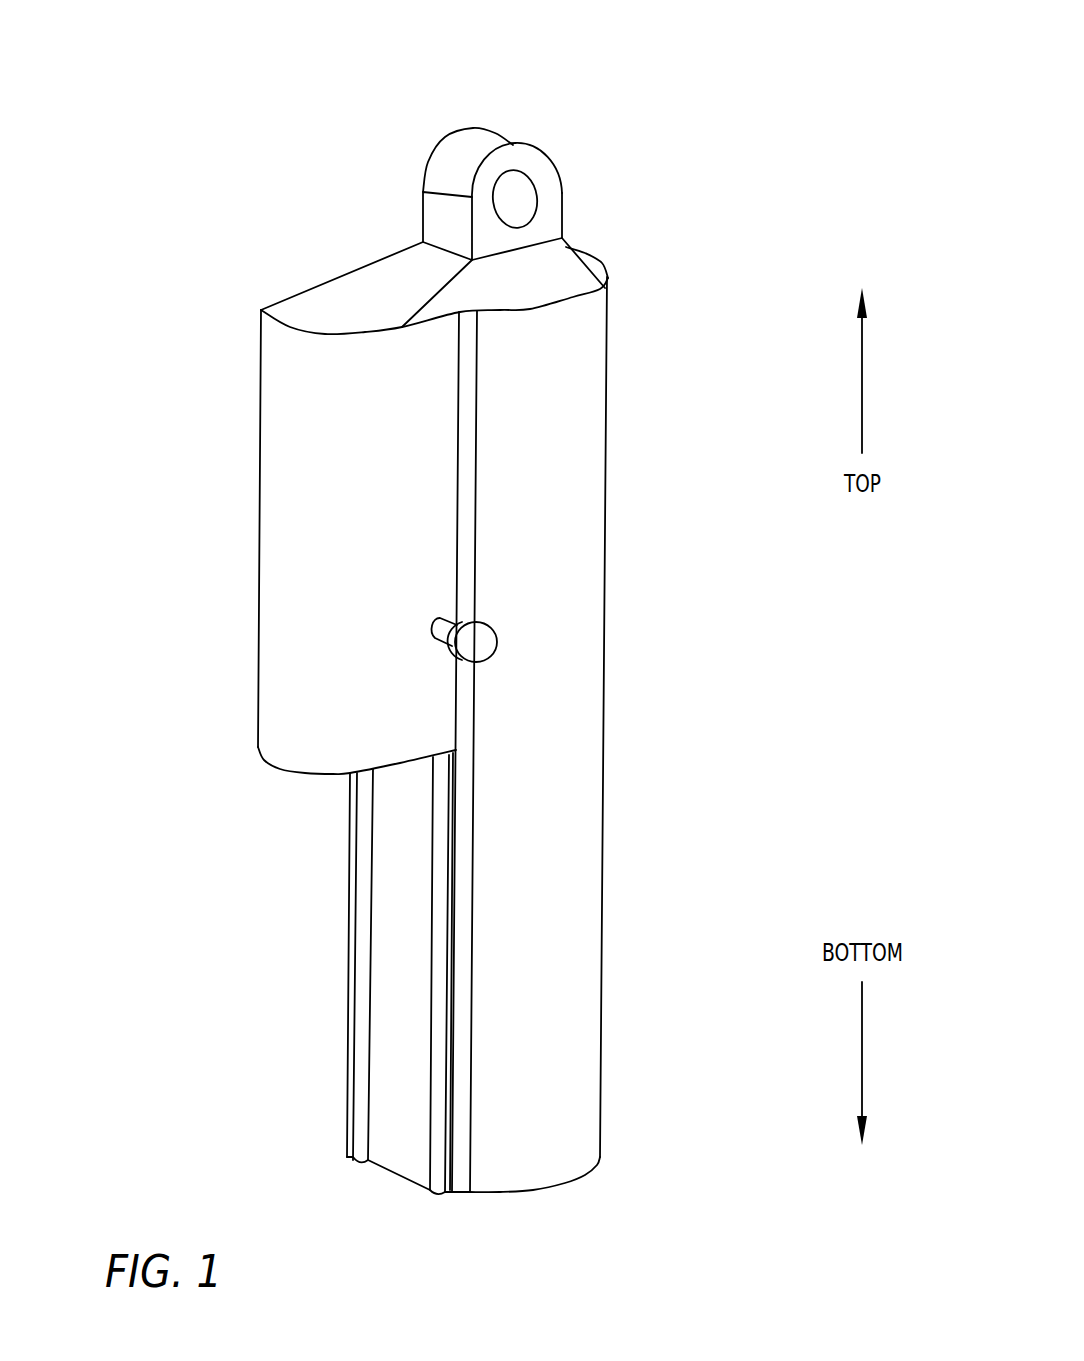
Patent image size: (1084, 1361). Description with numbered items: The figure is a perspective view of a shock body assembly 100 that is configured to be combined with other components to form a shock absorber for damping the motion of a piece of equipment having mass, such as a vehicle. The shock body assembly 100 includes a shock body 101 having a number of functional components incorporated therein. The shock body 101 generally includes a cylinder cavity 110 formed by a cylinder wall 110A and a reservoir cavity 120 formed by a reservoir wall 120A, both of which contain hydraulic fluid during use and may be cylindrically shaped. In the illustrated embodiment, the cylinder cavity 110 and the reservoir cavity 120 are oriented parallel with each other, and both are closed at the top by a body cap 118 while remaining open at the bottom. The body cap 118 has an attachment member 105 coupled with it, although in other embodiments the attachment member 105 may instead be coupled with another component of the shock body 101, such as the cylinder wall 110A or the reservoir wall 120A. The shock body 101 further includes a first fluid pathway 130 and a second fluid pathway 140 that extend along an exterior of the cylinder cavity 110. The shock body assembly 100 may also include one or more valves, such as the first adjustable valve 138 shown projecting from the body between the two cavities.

The shock body assembly 100 is at (690, 154).
The shock body 101 is at (635, 340).
The attachment member 105 is at (507, 138).
The cylinder cavity 110 is at (552, 945).
The cylinder wall 110A is at (600, 817).
The body cap 118 is at (378, 287).
The reservoir cavity 120 is at (307, 505).
The reservoir wall 120A is at (258, 623).
The first fluid pathway 130 is at (438, 1090).
The first adjustable valve 138 is at (478, 642).
The second fluid pathway 140 is at (363, 898).